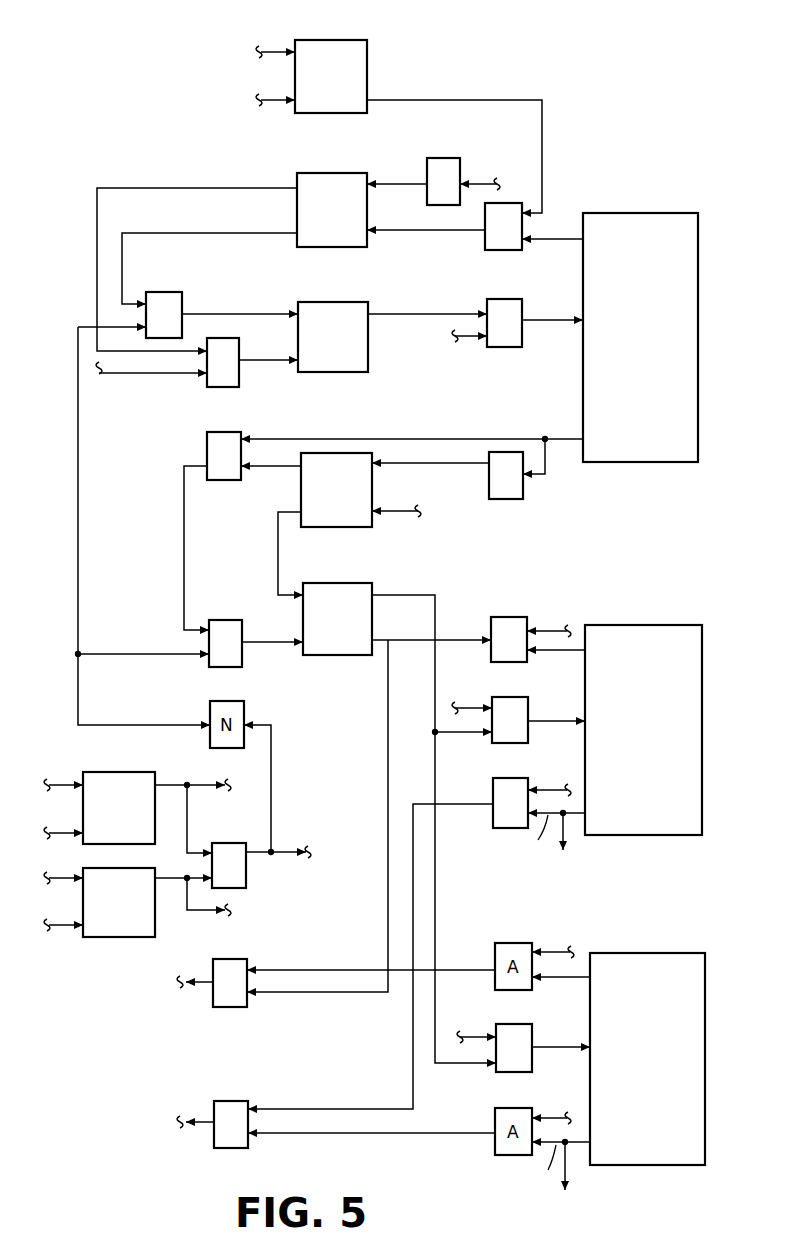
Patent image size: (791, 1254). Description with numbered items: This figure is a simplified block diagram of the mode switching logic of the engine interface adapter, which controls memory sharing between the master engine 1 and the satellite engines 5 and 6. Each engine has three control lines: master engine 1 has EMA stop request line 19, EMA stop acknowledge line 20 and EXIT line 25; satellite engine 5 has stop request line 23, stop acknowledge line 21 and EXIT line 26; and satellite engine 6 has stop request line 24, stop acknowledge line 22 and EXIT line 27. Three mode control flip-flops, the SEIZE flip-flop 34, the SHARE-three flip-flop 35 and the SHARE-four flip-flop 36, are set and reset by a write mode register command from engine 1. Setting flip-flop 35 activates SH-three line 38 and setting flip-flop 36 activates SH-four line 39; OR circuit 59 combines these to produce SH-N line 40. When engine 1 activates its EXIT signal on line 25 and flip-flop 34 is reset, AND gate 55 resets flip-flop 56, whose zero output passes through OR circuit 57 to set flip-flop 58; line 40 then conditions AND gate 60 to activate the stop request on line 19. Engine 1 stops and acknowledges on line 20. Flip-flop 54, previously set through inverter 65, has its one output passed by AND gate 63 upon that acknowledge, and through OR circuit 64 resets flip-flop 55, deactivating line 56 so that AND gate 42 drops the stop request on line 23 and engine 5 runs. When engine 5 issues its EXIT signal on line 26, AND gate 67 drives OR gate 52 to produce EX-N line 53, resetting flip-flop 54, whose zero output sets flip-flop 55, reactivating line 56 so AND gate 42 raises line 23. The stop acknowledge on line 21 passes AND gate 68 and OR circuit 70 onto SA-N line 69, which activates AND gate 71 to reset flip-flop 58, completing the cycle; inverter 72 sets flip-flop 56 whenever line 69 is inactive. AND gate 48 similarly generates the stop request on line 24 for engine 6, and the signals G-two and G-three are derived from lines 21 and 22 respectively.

The master engine 1 is at (633, 213).
The satellite engine 5 is at (640, 625).
The satellite engine 6 is at (635, 953).
The EMA stop request line 19 is at (533, 320).
The EMA stop acknowledge line 20 is at (435, 439).
The EMA stop acknowledge line 21 is at (578, 815).
The EMA stop acknowledge line 22 is at (582, 1145).
The EMA stop request line 23 is at (572, 722).
The EMA stop request line 24 is at (548, 1050).
The EXIT signal line 25 is at (552, 239).
The EXIT signal line 26 is at (578, 626).
The EXIT signal line 27 is at (557, 978).
The SEIZE flip-flop 34 is at (367, 67).
The SHARE 3 flip-flop 35 is at (83, 778).
The SHARE 4 flip-flop 36 is at (112, 940).
The SH-3 line 38 is at (530, 631).
The SH-4 line 39 is at (535, 952).
The SH-N line 40 is at (478, 338).
The AND gate 42 is at (492, 740).
The AND gate 48 is at (498, 1068).
The OR gate 52 is at (232, 959).
The EX-N line 53 is at (392, 512).
The flip-flop 54 is at (345, 527).
The flip-flop and AND gate 55 is at (486, 247).
The flip-flop and line 56 is at (330, 173).
The OR circuit 57 is at (176, 292).
The flip-flop 58 is at (340, 302).
The OR circuit 59 is at (222, 843).
The AND gate 60 is at (490, 299).
The AND gate 63 is at (228, 480).
The OR circuit 64 is at (240, 621).
The inverter 65 is at (515, 499).
The AND gate 67 is at (498, 617).
The AND gate 68 is at (494, 797).
The SA-N line 69 is at (468, 184).
The OR circuit 70 is at (240, 1148).
The AND gate 71 is at (239, 380).
The inverter 72 is at (440, 160).